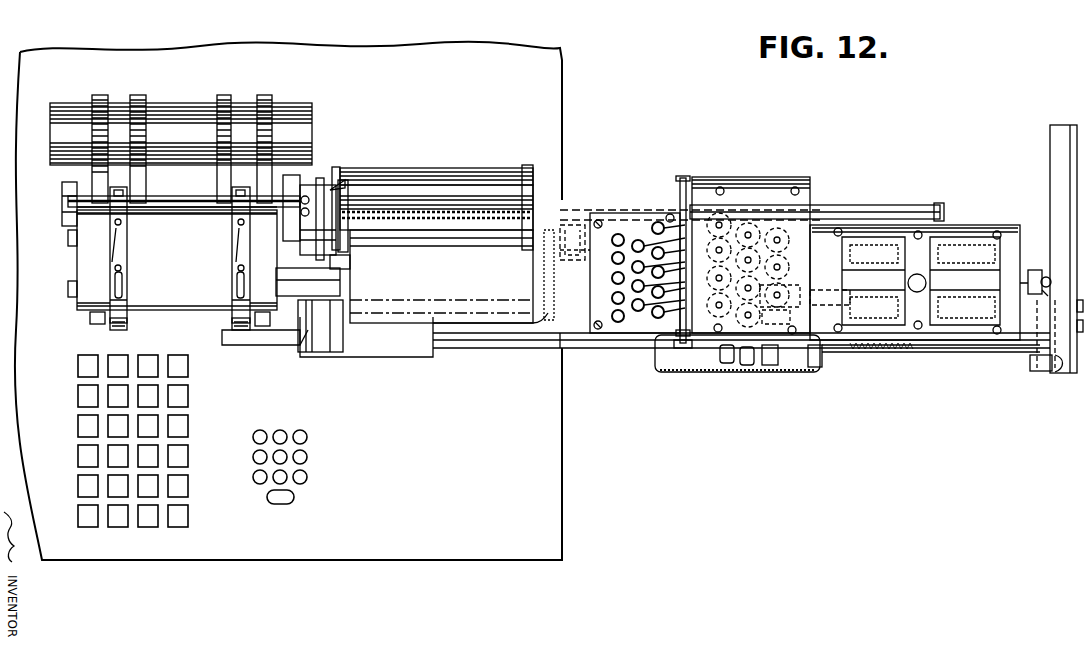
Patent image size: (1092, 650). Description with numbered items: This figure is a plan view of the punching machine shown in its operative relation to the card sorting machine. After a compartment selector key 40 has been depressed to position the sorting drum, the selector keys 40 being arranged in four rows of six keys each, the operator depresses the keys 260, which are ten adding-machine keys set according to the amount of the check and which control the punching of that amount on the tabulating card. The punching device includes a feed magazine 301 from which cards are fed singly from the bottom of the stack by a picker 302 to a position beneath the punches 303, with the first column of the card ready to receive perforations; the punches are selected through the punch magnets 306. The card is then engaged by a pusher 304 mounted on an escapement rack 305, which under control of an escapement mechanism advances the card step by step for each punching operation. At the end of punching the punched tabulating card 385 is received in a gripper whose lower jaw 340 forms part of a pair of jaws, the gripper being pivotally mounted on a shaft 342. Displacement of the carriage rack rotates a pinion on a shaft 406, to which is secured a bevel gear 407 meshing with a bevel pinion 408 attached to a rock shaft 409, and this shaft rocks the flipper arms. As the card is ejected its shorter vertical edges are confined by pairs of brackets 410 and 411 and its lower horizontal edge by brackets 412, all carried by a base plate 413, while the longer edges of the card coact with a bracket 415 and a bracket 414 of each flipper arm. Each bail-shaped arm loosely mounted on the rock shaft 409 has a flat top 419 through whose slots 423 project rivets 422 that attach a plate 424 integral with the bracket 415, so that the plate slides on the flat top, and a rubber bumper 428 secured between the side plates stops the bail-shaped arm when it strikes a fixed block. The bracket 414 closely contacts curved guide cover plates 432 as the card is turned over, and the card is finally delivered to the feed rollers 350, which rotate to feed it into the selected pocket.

The compartment selector keys 40 is at (94, 527).
The amount keys 260 is at (298, 430).
The feed magazine 301 is at (962, 245).
The picker 302 is at (1038, 272).
The punches 303 is at (552, 290).
The pusher 304 is at (568, 258).
The escapement rack 305 is at (455, 212).
The punch magnets 306 is at (775, 230).
The lower jaw 340 is at (330, 322).
The shaft 342 is at (322, 304).
The feed rollers 350 is at (176, 112).
The punched tabulating card 385 is at (398, 290).
The shaft 406 is at (298, 292).
The bevel gear 407 is at (318, 197).
The bevel pinion 408 is at (291, 178).
The rock shaft 409 is at (173, 200).
The brackets 410 is at (352, 262).
The brackets 411 is at (68, 240).
The brackets 412 is at (96, 318).
The base plate 413 is at (177, 260).
The bracket 414 is at (118, 316).
The bracket 415 is at (232, 215).
The flat top 419 is at (108, 304).
The rivets 422 is at (112, 262).
The slots 423 is at (122, 290).
The plate 424 is at (127, 232).
The rubber bumper 428 is at (118, 324).
The curved guide cover plates 432 is at (138, 95).